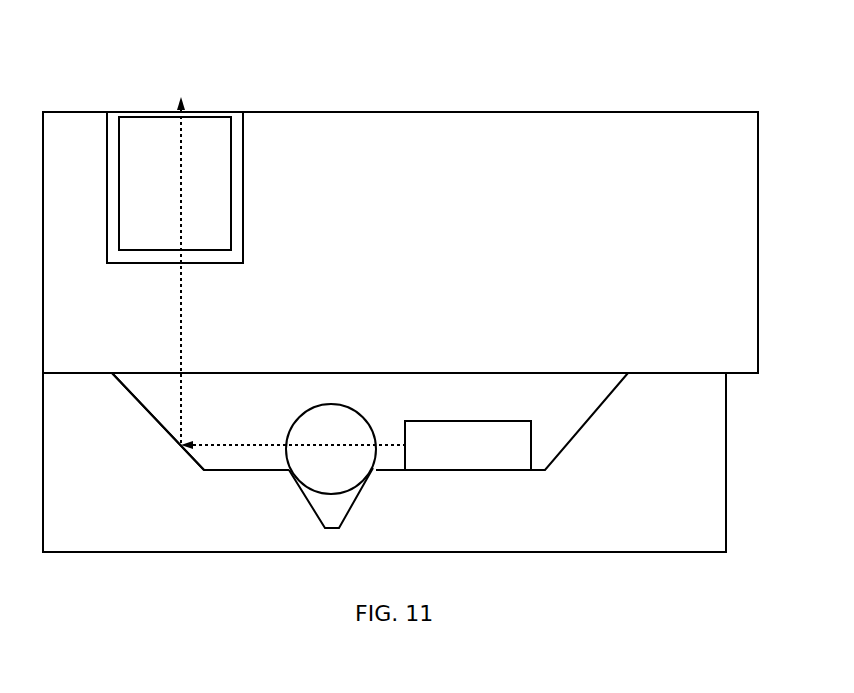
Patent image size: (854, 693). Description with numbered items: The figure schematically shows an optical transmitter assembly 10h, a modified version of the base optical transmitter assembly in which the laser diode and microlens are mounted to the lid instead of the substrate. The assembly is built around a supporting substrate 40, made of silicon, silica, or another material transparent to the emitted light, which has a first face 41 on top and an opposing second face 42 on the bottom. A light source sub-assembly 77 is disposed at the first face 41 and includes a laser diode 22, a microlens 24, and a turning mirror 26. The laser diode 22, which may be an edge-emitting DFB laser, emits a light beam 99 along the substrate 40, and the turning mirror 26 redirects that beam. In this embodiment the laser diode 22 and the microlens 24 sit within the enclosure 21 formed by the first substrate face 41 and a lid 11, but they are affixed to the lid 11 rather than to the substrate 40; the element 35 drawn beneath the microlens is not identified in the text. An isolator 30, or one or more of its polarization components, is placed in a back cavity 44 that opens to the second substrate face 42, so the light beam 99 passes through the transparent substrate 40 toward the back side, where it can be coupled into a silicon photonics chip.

The optical transmitter assembly 10h is at (291, 84).
The lid 11 is at (93, 511).
The enclosure 21 is at (228, 472).
The laser diode 22 is at (473, 456).
The microlens 24 is at (333, 404).
The turning mirror 26 is at (150, 424).
The isolator 30 is at (231, 152).
The lens holder 35 is at (356, 501).
The supporting substrate 40 is at (483, 148).
The first face 41 is at (647, 364).
The second face 42 is at (576, 116).
The back cavity 44 is at (106, 187).
The light source sub-assembly 77 is at (406, 384).
The light beam 99 is at (245, 444).